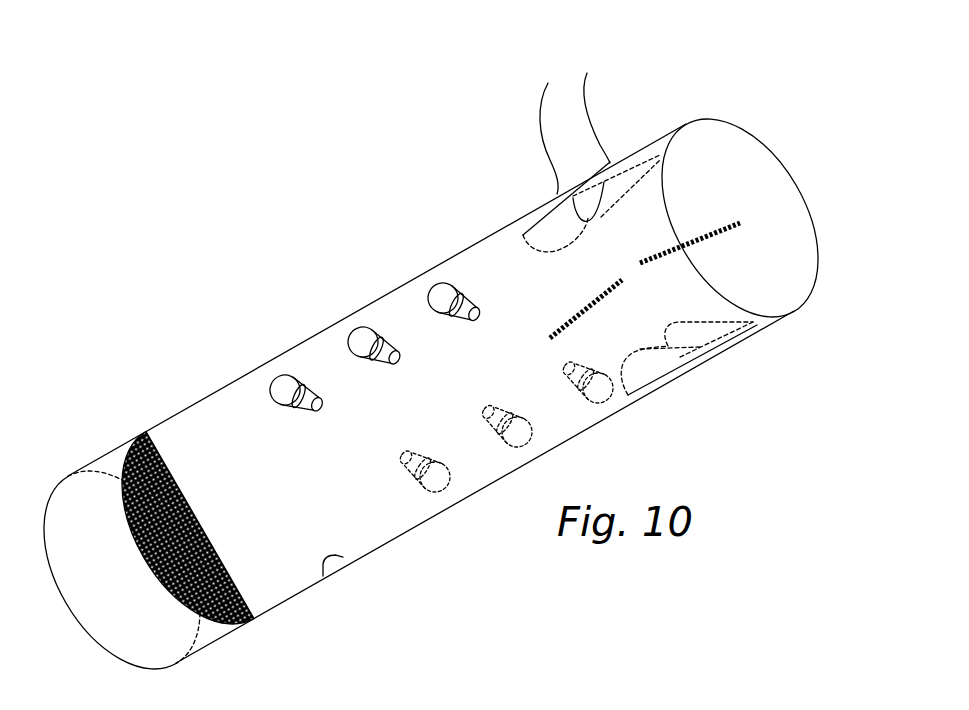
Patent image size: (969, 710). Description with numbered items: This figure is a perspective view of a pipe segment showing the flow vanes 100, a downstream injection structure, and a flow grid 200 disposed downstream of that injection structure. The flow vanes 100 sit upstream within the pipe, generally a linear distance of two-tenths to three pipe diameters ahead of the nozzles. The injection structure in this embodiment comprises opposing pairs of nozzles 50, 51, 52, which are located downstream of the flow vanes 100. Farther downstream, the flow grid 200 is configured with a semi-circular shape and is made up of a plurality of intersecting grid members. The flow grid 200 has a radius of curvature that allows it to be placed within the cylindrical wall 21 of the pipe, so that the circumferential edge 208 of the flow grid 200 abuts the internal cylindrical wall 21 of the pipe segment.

The flow grid 200 is at (128, 403).
The circumferential edge 208 is at (232, 634).
The cylindrical wall 21 is at (340, 556).
The nozzle 50 is at (404, 452).
The nozzle 51 is at (461, 400).
The nozzle 52 is at (517, 388).
The flow vanes 100 is at (710, 445).